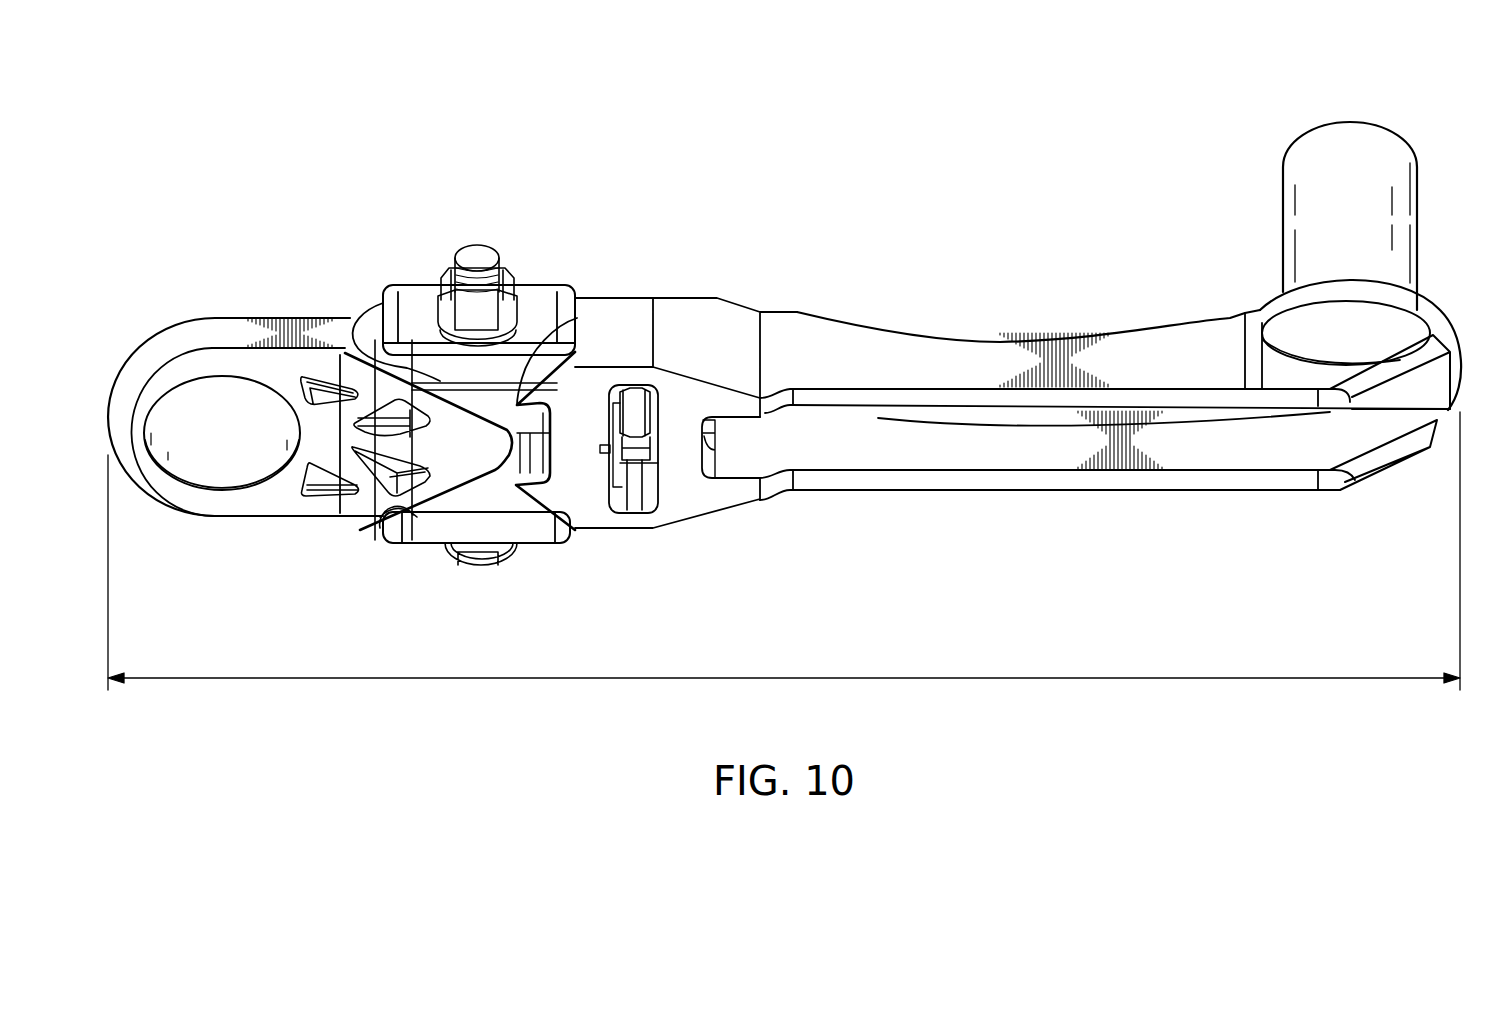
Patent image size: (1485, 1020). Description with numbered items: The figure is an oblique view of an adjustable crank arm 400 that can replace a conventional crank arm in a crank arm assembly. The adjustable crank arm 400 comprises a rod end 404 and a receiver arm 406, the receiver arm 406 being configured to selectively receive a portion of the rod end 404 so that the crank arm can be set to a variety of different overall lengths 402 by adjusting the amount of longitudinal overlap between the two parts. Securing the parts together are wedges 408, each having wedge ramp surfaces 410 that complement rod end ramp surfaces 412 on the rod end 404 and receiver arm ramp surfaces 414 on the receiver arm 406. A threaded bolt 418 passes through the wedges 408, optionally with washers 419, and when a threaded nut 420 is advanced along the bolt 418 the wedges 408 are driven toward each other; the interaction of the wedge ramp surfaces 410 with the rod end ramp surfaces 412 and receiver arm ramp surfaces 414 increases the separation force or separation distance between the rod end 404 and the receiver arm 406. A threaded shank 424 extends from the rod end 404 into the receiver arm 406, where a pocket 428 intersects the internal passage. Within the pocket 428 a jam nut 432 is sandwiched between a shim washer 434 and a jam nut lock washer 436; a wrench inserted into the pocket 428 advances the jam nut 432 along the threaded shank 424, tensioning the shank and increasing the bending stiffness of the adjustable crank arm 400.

The adjustable crank arm 400 is at (418, 150).
The overall length 402 is at (786, 680).
The rod end 404 is at (178, 318).
The receiver arm 406 is at (1123, 338).
The wedges 408 is at (553, 297).
The wedge ramp surfaces 410 is at (358, 336).
The rod end ramp surfaces 412 is at (445, 384).
The receiver arm ramp surfaces 414 is at (577, 318).
The threaded bolt 418 is at (510, 562).
The washers 419 is at (433, 315).
The threaded nut 420 is at (523, 295).
The threaded shank 424 is at (727, 450).
The pocket 428 is at (652, 493).
The jam nut 432 is at (640, 405).
The shim washer 434 is at (653, 433).
The jam nut lock washer 436 is at (637, 447).